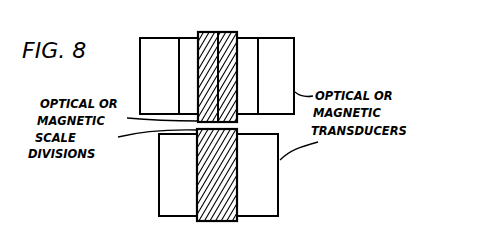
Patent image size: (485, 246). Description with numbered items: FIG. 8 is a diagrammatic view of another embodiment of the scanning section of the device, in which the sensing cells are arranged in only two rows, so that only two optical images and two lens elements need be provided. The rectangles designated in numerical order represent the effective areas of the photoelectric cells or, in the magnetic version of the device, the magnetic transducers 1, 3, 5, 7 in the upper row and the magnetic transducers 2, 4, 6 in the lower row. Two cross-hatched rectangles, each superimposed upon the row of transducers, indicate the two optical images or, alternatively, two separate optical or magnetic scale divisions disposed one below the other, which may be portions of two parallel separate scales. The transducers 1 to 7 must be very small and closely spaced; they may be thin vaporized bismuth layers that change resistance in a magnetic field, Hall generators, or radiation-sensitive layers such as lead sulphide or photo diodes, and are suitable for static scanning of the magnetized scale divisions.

The magnetic transducer 1 is at (159, 76).
The magnetic transducer 2 is at (178, 175).
The magnetic transducer 3 is at (188, 76).
The magnetic transducer 4 is at (217, 175).
The magnetic transducer 5 is at (247, 76).
The magnetic transducer 6 is at (257, 175).
The magnetic transducer 7 is at (276, 76).